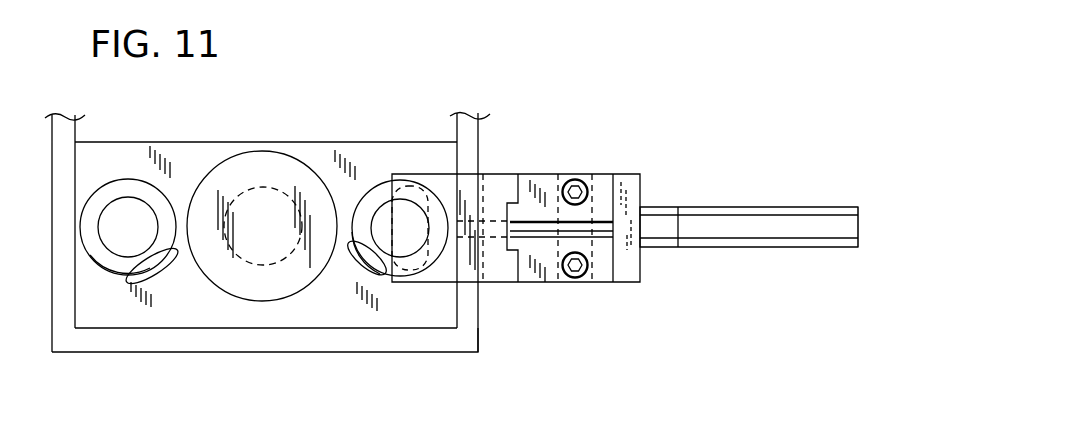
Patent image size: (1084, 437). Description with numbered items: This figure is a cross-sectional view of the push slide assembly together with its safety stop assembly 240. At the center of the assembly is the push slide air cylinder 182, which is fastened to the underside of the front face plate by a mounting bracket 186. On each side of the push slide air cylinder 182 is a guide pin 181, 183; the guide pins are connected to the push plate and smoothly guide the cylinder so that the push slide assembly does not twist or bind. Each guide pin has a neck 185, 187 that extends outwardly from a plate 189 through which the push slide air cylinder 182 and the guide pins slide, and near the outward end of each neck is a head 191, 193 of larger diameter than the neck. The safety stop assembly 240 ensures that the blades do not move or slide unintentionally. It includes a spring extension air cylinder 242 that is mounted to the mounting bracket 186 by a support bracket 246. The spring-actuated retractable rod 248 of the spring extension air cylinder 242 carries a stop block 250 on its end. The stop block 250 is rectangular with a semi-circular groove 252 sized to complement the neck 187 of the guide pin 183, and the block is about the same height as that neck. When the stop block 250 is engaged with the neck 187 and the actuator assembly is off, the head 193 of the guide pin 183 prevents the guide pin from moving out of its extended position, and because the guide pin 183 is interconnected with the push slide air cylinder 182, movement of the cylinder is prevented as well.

The guide pin 181 is at (158, 267).
The push slide air cylinder 182 is at (220, 162).
The guide pin 183 is at (362, 262).
The neck 185 is at (105, 203).
The mounting bracket 186 is at (480, 132).
The neck 187 is at (378, 203).
The plate 189 is at (223, 352).
The head 191 is at (98, 273).
The head 193 is at (382, 280).
The safety stop assembly 240 is at (706, 160).
The spring extension air cylinder 242 is at (778, 207).
The support bracket 246 is at (555, 282).
The spring-actuated retractable rod 248 is at (537, 235).
The stop block 250 is at (503, 172).
The semi-circular groove 252 is at (427, 262).